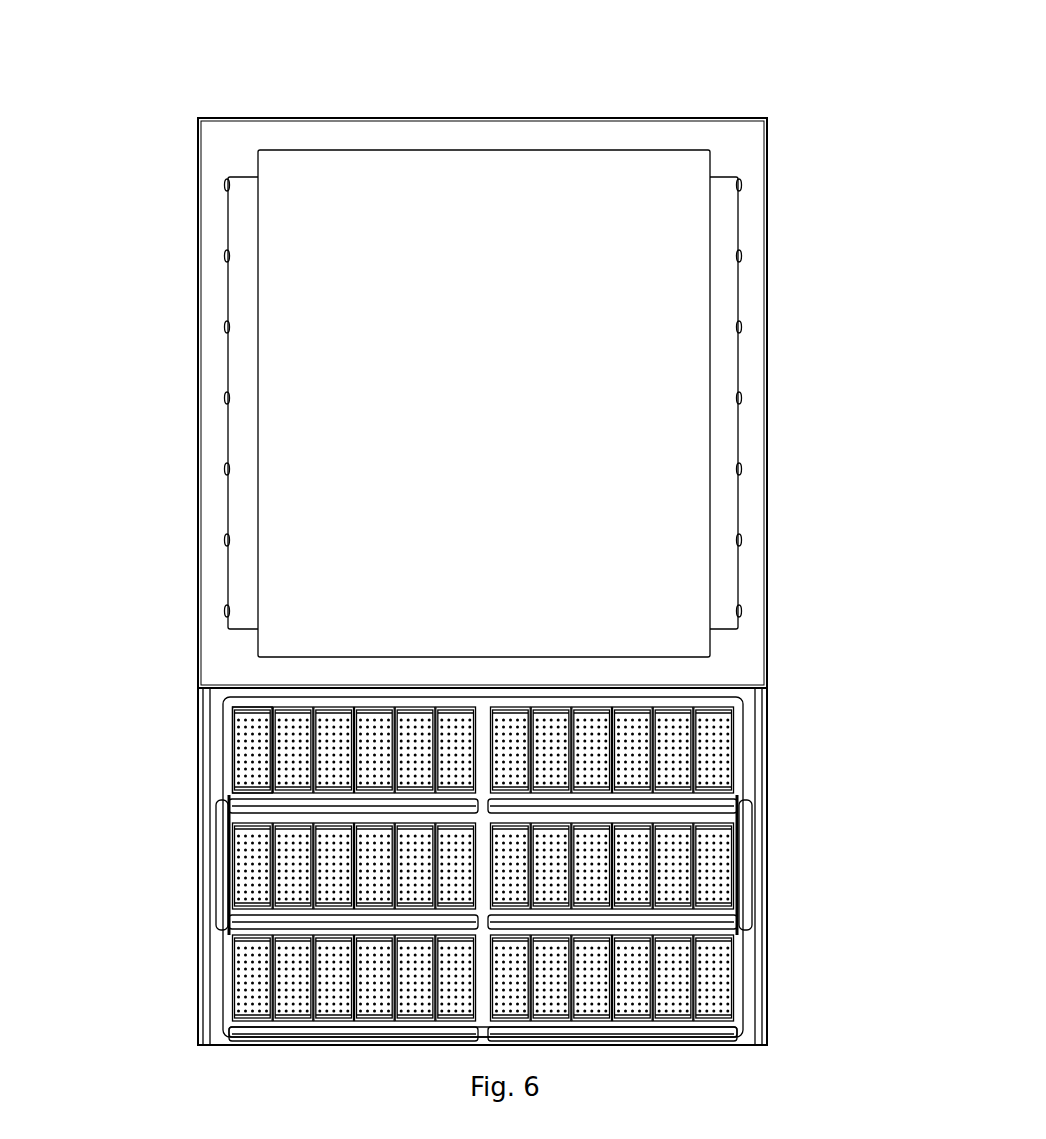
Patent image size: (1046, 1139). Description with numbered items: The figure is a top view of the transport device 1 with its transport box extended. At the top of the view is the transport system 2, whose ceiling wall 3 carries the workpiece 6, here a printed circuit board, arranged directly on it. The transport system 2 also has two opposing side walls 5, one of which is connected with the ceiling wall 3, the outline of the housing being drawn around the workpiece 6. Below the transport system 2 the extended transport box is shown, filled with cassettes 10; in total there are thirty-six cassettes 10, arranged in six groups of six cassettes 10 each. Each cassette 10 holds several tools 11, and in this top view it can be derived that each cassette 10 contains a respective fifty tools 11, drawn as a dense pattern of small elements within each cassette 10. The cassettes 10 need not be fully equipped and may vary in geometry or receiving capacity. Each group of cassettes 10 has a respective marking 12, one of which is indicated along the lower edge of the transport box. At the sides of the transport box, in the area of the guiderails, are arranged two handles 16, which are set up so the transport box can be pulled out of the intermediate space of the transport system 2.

The transport device 1 is at (149, 225).
The transport system 2 is at (133, 402).
The ceiling wall 3 is at (735, 141).
The side wall 5 is at (198, 536).
The workpiece 6 is at (405, 180).
The cassette 10 is at (715, 712).
The tool 11 is at (235, 740).
The marking 12 is at (705, 1036).
The handle 16 is at (222, 807).